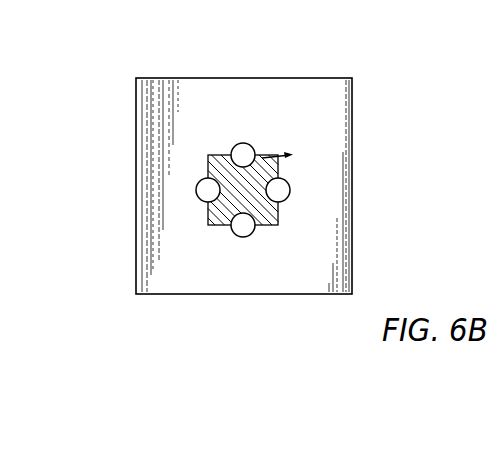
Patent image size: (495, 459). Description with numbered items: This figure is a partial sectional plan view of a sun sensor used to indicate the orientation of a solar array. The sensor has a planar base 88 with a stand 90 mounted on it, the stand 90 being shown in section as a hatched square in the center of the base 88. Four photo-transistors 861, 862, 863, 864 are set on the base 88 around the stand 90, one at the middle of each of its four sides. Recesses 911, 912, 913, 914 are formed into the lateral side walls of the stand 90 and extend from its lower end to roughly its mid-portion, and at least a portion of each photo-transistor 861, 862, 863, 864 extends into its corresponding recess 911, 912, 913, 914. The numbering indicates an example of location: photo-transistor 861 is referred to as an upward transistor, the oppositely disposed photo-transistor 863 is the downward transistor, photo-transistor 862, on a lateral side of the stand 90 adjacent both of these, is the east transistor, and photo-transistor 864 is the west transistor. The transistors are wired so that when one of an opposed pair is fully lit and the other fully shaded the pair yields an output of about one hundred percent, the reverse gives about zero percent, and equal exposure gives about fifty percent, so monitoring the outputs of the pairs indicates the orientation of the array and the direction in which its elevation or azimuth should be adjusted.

The planar base 88 is at (167, 80).
The stand 90 is at (293, 154).
The upward photo-transistor 861 is at (240, 143).
The east photo-transistor 862 is at (290, 182).
The downward photo-transistor 863 is at (243, 237).
The west photo-transistor 864 is at (197, 188).
The recess 911 is at (264, 155).
The recess 912 is at (290, 194).
The recess 913 is at (250, 232).
The recess 914 is at (204, 197).